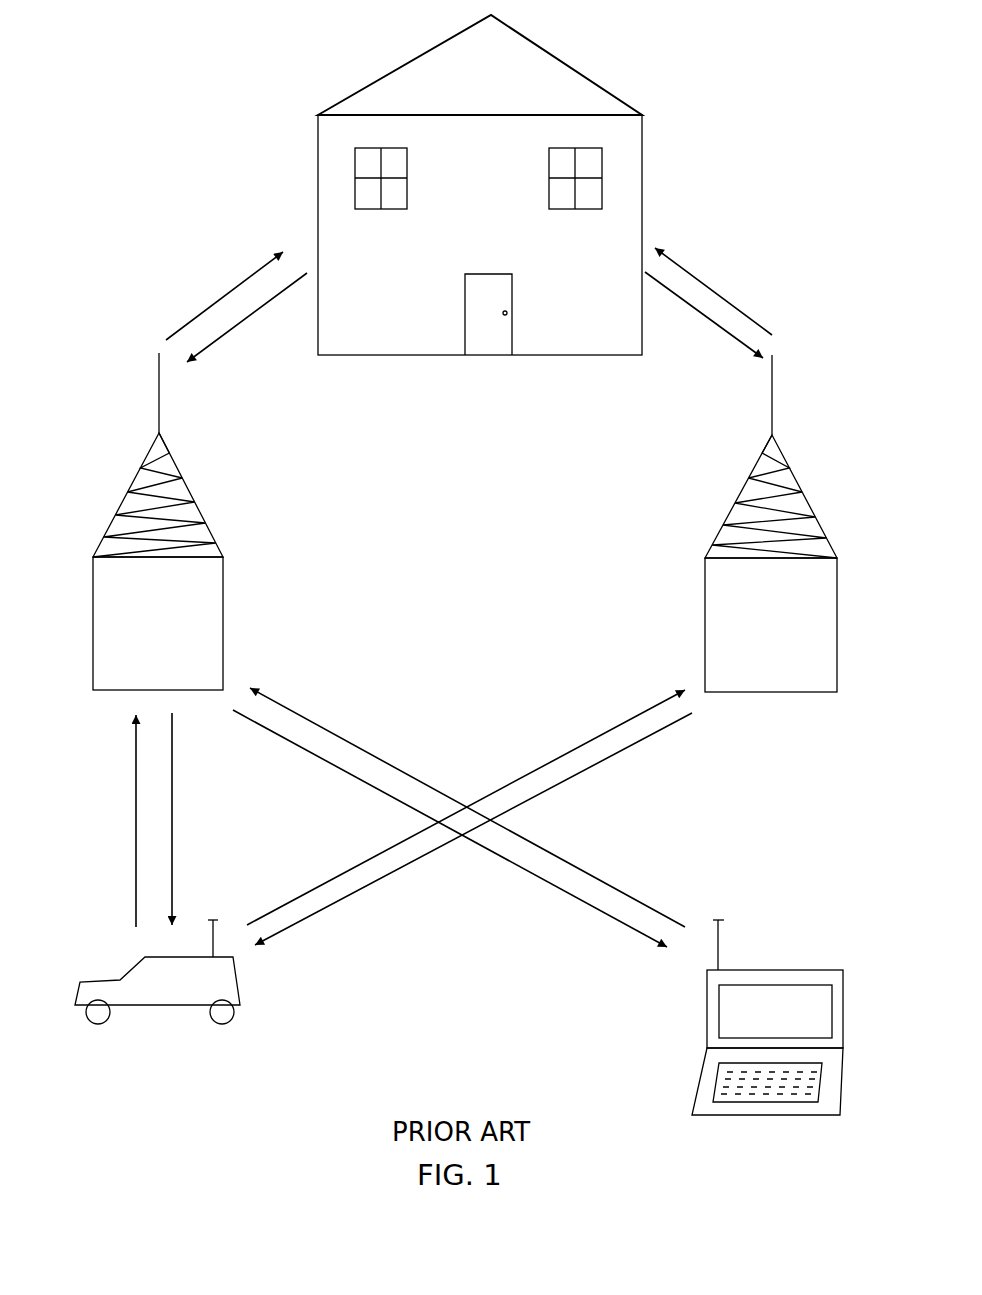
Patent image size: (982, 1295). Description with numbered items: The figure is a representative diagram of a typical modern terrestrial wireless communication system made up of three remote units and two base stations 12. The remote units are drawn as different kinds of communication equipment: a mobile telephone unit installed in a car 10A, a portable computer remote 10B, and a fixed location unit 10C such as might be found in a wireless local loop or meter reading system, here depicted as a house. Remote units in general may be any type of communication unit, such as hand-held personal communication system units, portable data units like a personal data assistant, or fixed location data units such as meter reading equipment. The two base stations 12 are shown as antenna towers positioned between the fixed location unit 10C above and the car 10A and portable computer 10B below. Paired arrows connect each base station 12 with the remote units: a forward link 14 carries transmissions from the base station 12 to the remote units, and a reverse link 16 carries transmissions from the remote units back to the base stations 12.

The mobile telephone unit installed in a car 10A is at (100, 977).
The portable computer remote 10B is at (818, 965).
The fixed location unit 10C is at (563, 63).
The base station 12 is at (127, 492).
The forward link 14 is at (240, 283).
The reverse link 16 is at (260, 308).